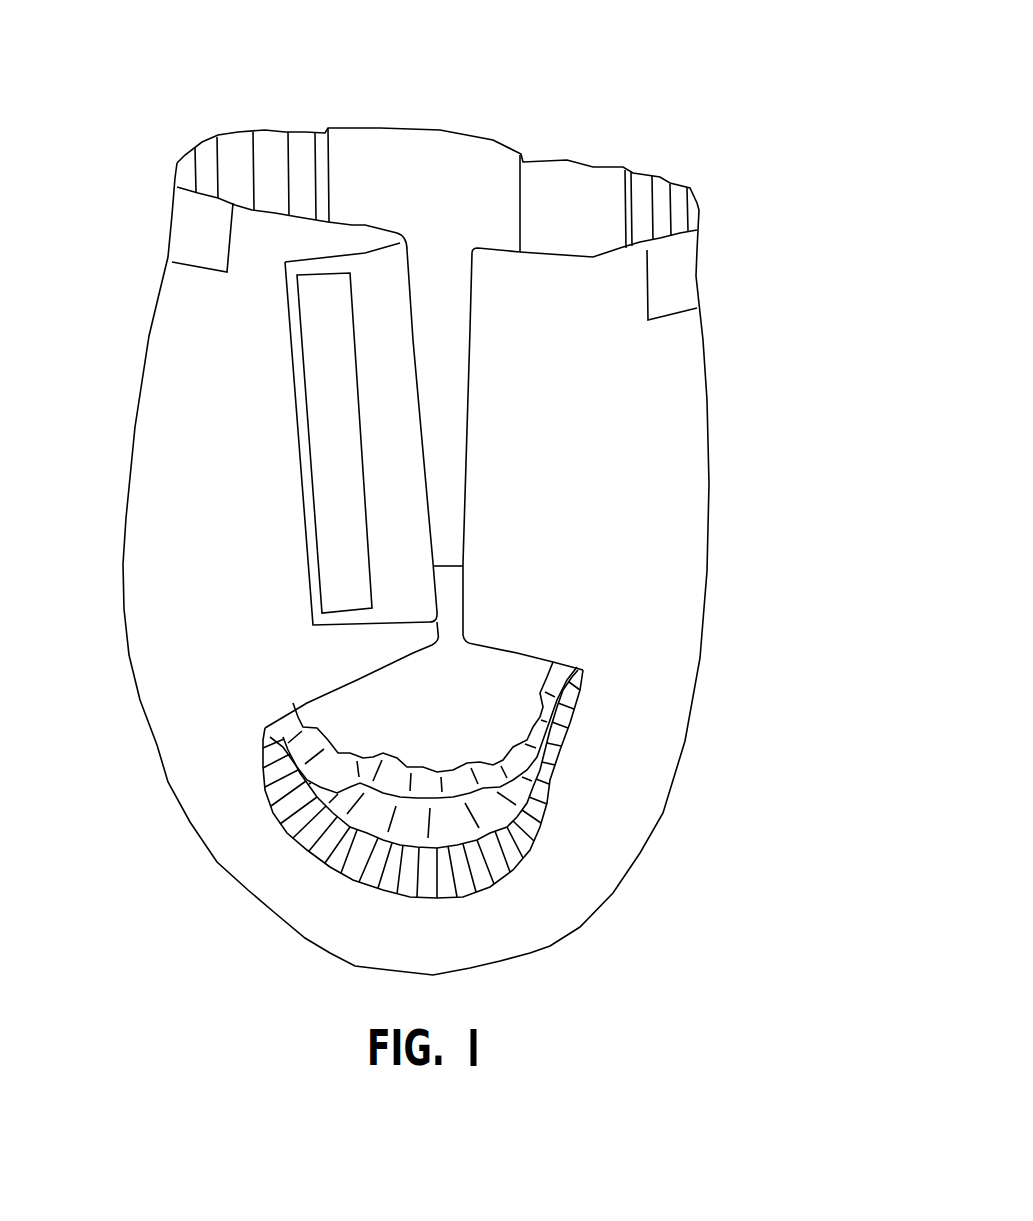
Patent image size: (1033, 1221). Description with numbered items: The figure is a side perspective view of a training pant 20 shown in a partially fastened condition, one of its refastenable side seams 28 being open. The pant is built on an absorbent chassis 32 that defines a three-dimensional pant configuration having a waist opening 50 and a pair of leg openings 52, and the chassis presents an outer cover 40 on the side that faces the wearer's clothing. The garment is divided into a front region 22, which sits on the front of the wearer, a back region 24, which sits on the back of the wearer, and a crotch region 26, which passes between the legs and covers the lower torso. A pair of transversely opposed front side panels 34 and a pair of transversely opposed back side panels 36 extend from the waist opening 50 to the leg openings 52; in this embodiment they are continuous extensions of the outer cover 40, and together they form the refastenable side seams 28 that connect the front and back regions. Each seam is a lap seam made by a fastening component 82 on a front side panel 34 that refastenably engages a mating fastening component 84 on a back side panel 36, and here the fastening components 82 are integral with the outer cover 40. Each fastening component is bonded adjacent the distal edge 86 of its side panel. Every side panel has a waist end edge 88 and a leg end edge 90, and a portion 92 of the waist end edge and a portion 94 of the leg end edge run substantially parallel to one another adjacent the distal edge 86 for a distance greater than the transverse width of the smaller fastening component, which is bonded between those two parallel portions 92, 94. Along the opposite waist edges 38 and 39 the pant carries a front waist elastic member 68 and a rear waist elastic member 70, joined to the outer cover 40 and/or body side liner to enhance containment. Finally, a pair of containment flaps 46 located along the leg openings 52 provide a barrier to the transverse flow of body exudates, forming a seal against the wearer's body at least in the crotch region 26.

The training pant 20 is at (658, 104).
The front region 22 is at (669, 612).
The back region 24 is at (182, 582).
The crotch region 26 is at (295, 893).
The refastenable side seam 28 is at (528, 144).
The absorbent chassis 32 is at (197, 781).
The front side panel 34 is at (593, 257).
The back side panel 36 is at (275, 230).
The waist edge 38 is at (700, 205).
The waist edge 39 is at (177, 165).
The outer cover 40 is at (592, 880).
The containment flap 46 is at (353, 868).
The waist opening 50 is at (404, 182).
The leg opening 52 is at (334, 703).
The front waist elastic member 68 is at (707, 273).
The rear waist elastic member 70 is at (167, 218).
The fastening component 82 is at (570, 330).
The mating fastening component 84 is at (320, 393).
The distal edge 86 is at (472, 307).
The waist end edge 88 is at (495, 150).
The leg end edge 90 is at (345, 632).
The parallel portion of waist end edge 92 is at (312, 258).
The parallel portion of leg end edge 94 is at (350, 628).